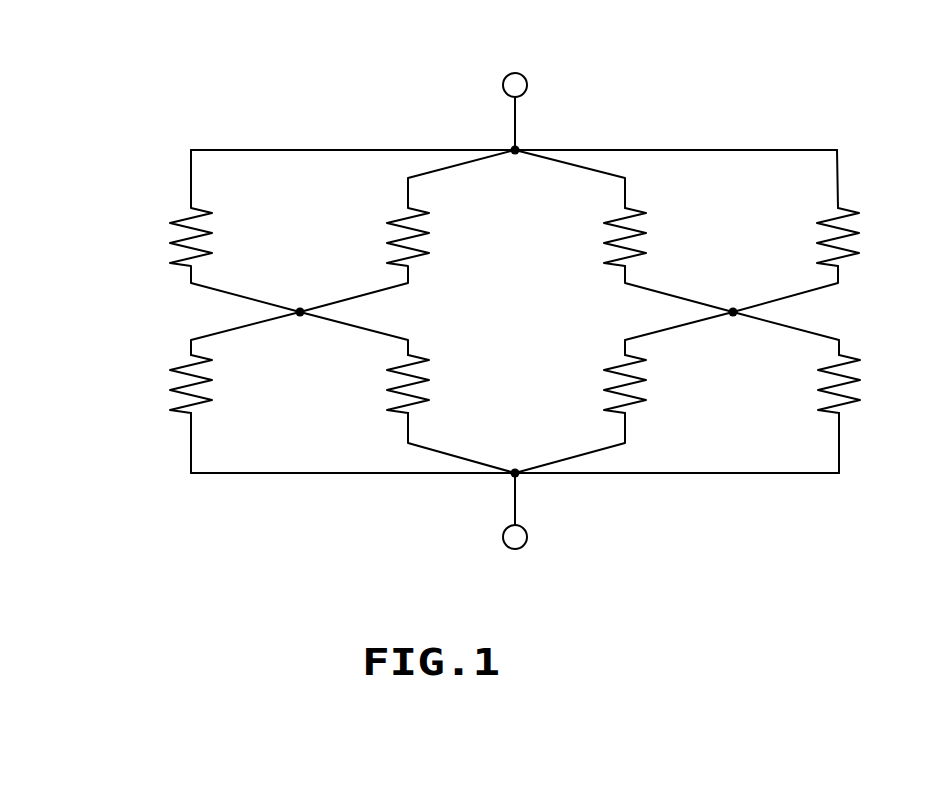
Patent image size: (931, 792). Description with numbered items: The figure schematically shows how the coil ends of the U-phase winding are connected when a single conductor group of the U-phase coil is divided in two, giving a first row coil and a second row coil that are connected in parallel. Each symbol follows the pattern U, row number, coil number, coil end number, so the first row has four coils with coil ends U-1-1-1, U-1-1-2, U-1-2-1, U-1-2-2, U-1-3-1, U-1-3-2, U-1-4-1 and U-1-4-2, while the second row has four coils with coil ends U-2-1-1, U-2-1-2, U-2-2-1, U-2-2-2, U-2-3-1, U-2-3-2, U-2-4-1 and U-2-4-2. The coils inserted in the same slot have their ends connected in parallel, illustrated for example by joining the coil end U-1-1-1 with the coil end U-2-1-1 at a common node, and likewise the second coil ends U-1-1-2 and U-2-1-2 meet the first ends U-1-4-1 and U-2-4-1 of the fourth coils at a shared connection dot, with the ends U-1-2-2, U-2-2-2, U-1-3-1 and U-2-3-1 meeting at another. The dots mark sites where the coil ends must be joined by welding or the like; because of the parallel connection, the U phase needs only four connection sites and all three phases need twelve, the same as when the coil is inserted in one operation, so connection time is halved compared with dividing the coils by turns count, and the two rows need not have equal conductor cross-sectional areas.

The coil end U-1-1-1 is at (142, 179).
The coil end U-1-1-2 is at (196, 287).
The coil end U-1-4-1 is at (196, 336).
The coil end U-1-4-2 is at (142, 443).
The coil end U-2-1-1 is at (416, 179).
The coil end U-2-1-2 is at (354, 287).
The coil end U-2-4-1 is at (354, 336).
The coil end U-2-4-2 is at (416, 443).
The coil end U-1-2-1 is at (570, 179).
The coil end U-1-2-2 is at (631, 287).
The coil end U-1-3-1 is at (631, 336).
The coil end U-1-3-2 is at (570, 443).
The coil end U-2-2-1 is at (791, 179).
The coil end U-2-2-2 is at (785, 287).
The coil end U-2-3-1 is at (786, 336).
The coil end U-2-3-2 is at (792, 443).